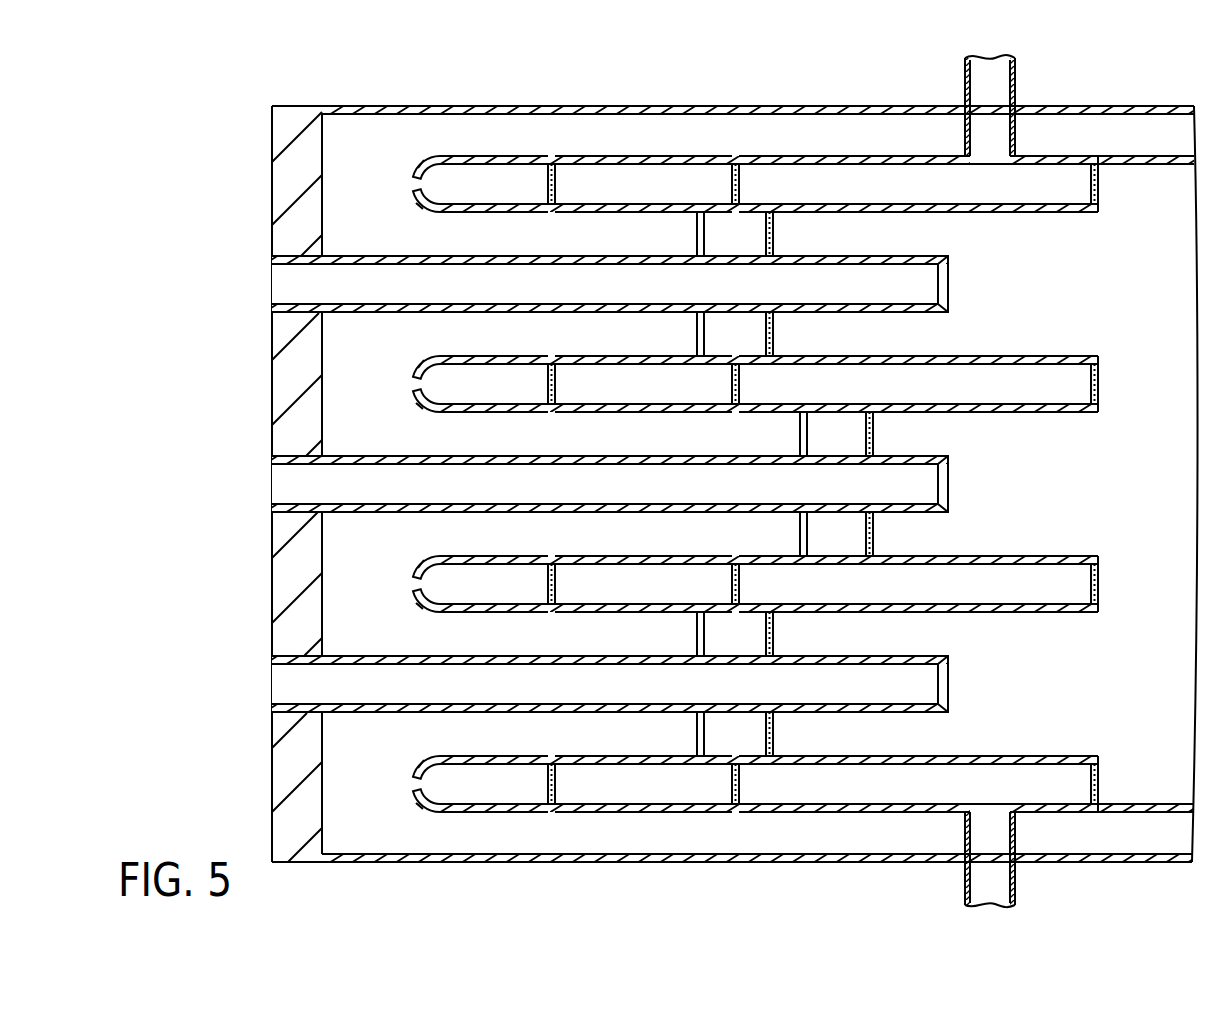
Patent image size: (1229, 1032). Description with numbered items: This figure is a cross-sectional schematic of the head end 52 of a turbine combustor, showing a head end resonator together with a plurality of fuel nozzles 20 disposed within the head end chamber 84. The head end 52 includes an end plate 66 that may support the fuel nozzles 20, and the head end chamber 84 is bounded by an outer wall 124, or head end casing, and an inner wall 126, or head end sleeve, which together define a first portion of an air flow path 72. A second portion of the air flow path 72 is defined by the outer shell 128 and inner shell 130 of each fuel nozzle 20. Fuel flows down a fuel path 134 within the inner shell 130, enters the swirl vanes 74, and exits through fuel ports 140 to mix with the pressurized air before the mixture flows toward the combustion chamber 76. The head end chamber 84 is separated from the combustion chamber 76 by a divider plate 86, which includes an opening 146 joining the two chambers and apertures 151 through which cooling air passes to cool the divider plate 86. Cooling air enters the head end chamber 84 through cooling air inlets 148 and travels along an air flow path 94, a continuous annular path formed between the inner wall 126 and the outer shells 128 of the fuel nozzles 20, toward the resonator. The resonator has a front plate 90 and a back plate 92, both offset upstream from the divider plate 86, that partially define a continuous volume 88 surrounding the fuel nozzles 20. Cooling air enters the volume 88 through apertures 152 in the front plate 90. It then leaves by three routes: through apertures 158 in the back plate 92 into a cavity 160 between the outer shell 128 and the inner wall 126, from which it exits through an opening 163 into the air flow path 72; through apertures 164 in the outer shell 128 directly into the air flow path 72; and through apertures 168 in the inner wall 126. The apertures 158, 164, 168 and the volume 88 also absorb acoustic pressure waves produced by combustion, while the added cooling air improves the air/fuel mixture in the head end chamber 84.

The head end 52 is at (278, 73).
The end plate 66 is at (272, 384).
The air flow path 72 is at (365, 198).
The swirl vanes 74 is at (766, 334).
The combustion chamber 76 is at (1161, 759).
The head end chamber 84 is at (336, 757).
The divider plate 86 is at (1100, 198).
The volume 88 is at (650, 198).
The front plate 90 is at (740, 184).
The back plate 92 is at (555, 188).
The air flow path 94 is at (951, 198).
The fuel nozzle 20 is at (813, 200).
The outer wall 124 is at (705, 106).
The inner wall 126 is at (863, 157).
The outer shell 128 is at (903, 213).
The inner shell 130 is at (425, 256).
The fuel path 134 is at (525, 299).
The fuel ports 140 is at (825, 484).
The opening 146 is at (1102, 290).
The cooling air inlet 148 is at (1015, 70).
The apertures 151 is at (1098, 172).
The apertures 152 is at (732, 200).
The apertures 158 is at (548, 166).
The cavity 160 is at (505, 198).
The opening 163 is at (425, 181).
The apertures 164 is at (664, 204).
The apertures 168 is at (644, 164).